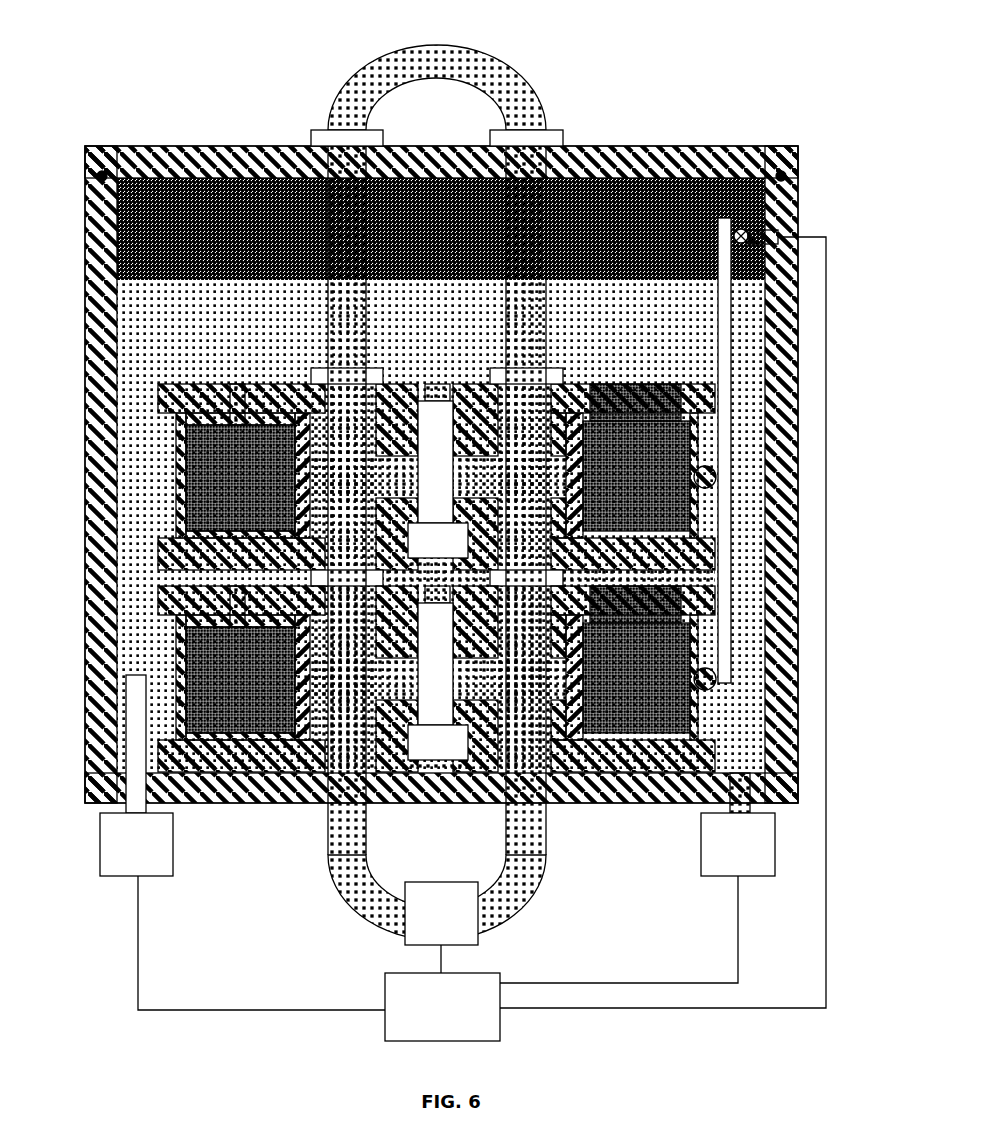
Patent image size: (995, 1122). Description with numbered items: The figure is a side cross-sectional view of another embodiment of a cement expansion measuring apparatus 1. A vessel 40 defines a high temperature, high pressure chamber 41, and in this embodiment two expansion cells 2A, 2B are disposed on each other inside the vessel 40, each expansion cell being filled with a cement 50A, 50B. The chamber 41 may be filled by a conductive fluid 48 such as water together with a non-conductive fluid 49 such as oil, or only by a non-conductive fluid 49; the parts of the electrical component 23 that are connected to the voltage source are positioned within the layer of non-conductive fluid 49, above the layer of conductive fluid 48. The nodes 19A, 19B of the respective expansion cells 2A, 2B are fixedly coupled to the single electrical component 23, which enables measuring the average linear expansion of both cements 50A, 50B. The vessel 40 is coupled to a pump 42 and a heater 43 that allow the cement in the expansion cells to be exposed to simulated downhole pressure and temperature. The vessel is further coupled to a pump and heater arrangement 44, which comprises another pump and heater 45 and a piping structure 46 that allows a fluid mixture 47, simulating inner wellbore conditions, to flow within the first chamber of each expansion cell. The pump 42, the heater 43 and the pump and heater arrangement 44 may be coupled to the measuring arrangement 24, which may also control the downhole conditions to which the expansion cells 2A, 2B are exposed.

The cement expansion measuring apparatus 1 is at (138, 60).
The vessel 40 is at (229, 152).
The high temperature, high pressure chamber 41 is at (283, 178).
The non-conductive fluid 49 is at (160, 215).
The conductive fluid 48 is at (162, 319).
The expansion cell 2B is at (576, 372).
The expansion cell 2A is at (615, 768).
The cement 50B is at (252, 481).
The cement 50A is at (252, 687).
The node 19B is at (708, 470).
The node 19A is at (708, 674).
The electrical component 23 is at (745, 208).
The piping structure 46 is at (498, 812).
The fluid mixture 47 is at (530, 849).
The pump and heater arrangement 44 is at (537, 875).
The pump and heater 45 is at (445, 918).
The heater 43 is at (137, 849).
The pump 42 is at (742, 849).
The measuring arrangement 24 is at (442, 1011).